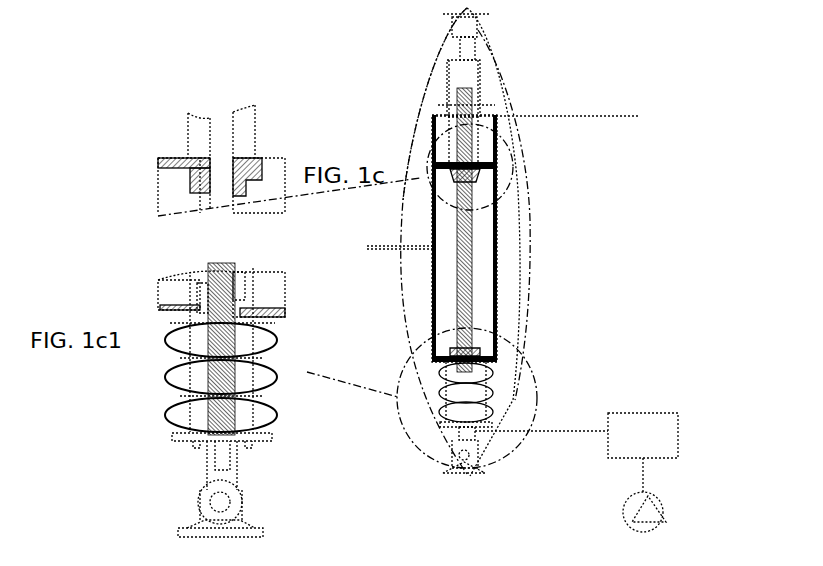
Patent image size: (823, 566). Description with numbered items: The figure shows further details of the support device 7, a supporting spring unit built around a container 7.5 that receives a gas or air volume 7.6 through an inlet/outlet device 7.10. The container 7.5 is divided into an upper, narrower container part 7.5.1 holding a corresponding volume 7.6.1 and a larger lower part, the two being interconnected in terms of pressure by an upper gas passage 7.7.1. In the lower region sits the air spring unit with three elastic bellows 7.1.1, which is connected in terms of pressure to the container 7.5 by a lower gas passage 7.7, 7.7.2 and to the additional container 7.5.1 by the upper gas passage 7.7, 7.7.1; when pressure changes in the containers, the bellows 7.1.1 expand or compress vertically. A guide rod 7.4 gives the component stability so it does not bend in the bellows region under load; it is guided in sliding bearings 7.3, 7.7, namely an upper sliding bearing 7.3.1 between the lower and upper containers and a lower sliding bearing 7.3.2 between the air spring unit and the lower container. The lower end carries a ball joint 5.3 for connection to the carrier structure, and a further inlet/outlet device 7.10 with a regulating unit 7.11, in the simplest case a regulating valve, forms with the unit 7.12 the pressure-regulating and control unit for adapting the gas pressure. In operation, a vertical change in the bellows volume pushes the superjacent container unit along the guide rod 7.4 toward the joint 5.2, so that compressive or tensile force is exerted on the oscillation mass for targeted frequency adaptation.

In FIG. 1c, the joint 5.2 is at (480, 22).
In FIG. 1c1, the ball joint 5.3 is at (215, 506).
In FIG. 1c, the support device 7 is at (432, 52).
In FIG. 1c, the elastic bellows 7.1.1 is at (495, 393).
In FIG. 1c1, the elastic bellows 7.1.1 is at (182, 382).
In FIG. 1c, the sliding bearing 7.3 is at (455, 160).
In FIG. 1c, the upper sliding bearing 7.3.1 is at (192, 157).
In FIG. 1c1, the lower sliding bearing 7.3.2 is at (205, 288).
In FIG. 1c, the guide rod 7.4 is at (470, 312).
In FIG. 1c, the container 7.5 is at (497, 283).
In FIG. 1c, the upper container part 7.5.1 is at (480, 100).
In FIG. 1c, the gas or air volume 7.6 is at (485, 195).
In FIG. 1c, the volume 7.6.1 is at (440, 105).
In FIG. 1c, the gas passage 7.7 is at (498, 165).
In FIG. 1c, the upper gas passage 7.7.1 is at (240, 153).
In FIG. 1c1, the lower gas passage 7.7.2 is at (248, 300).
In FIG. 1c, the inlet/outlet device 7.10 is at (456, 437).
In FIG. 1c1, the inlet/outlet device 7.10 is at (240, 448).
In FIG. 1c, the regulating unit 7.11 is at (641, 413).
In FIG. 1c, the pressure-regulating and control unit 7.12 is at (665, 508).